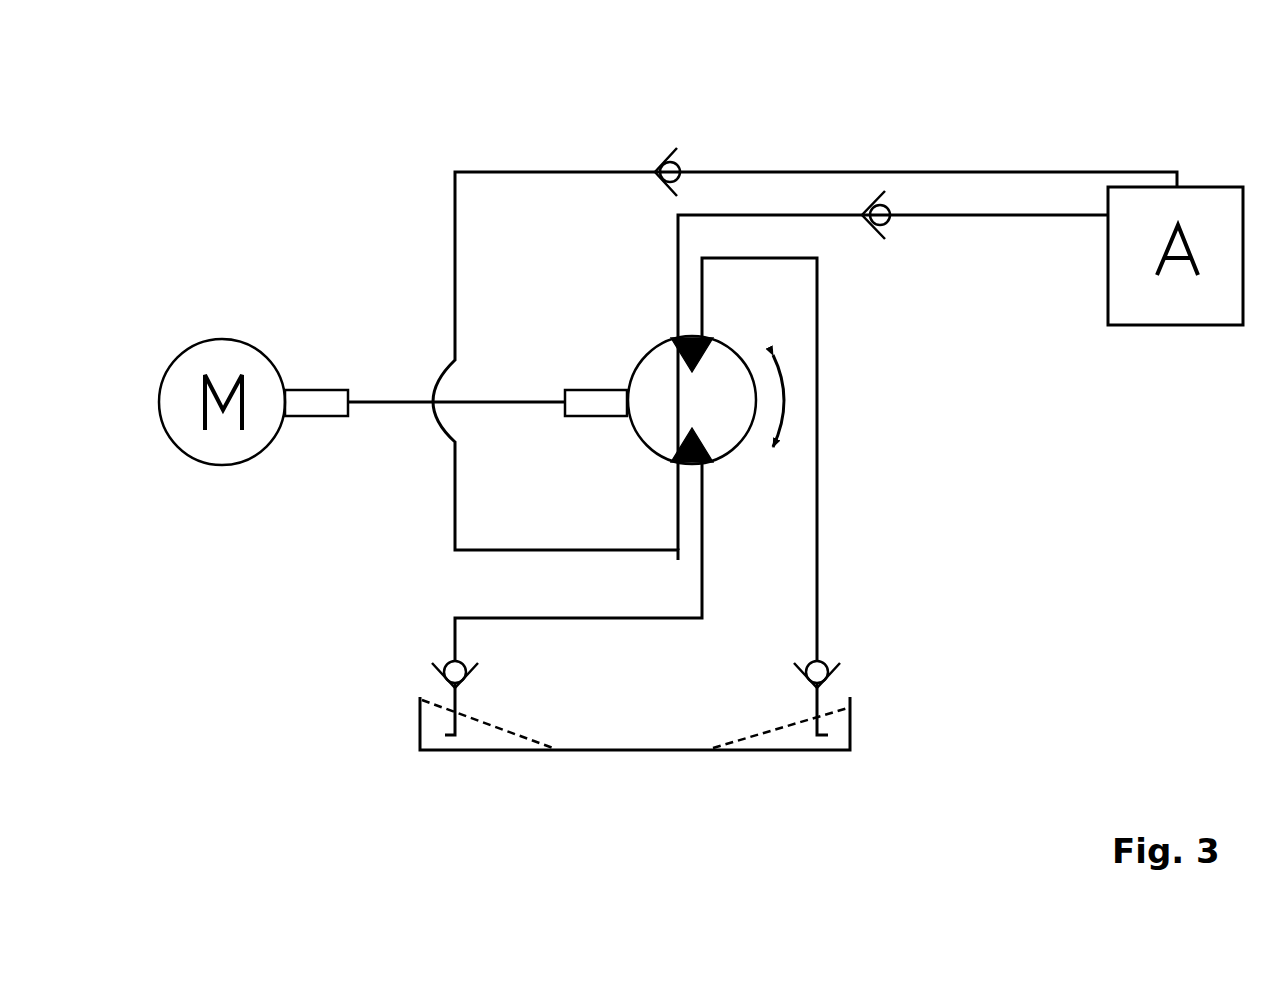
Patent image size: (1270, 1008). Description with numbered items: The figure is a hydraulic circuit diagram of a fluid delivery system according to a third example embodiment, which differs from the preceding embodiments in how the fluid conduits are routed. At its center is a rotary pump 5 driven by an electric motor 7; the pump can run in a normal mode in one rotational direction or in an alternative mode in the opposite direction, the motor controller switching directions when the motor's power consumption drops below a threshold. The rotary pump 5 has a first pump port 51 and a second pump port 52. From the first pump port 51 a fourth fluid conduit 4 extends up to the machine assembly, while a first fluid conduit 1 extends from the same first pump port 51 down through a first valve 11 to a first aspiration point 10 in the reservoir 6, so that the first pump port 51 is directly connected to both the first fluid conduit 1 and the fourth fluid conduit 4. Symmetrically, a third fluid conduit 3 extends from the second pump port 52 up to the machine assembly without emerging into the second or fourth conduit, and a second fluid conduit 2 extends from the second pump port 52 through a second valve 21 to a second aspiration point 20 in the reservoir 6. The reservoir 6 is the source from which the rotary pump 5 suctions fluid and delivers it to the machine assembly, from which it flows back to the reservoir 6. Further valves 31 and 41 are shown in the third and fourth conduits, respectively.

The first fluid conduit 1 is at (736, 252).
The second fluid conduit 2 is at (535, 614).
The third fluid conduit 3 is at (499, 168).
The fourth fluid conduit 4 is at (833, 210).
The rotary pump 5 is at (802, 405).
The reservoir 6 is at (617, 756).
The electric motor 7 is at (236, 334).
The first aspiration point 10 is at (826, 733).
The first valve 11 is at (848, 666).
The second aspiration point 20 is at (448, 733).
The second valve 21 is at (428, 666).
The check valve 31 is at (647, 155).
The check valve 41 is at (907, 188).
The first pump port 51 is at (722, 337).
The second pump port 52 is at (708, 465).